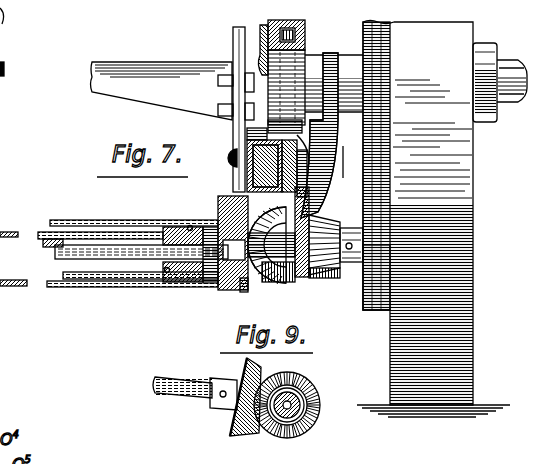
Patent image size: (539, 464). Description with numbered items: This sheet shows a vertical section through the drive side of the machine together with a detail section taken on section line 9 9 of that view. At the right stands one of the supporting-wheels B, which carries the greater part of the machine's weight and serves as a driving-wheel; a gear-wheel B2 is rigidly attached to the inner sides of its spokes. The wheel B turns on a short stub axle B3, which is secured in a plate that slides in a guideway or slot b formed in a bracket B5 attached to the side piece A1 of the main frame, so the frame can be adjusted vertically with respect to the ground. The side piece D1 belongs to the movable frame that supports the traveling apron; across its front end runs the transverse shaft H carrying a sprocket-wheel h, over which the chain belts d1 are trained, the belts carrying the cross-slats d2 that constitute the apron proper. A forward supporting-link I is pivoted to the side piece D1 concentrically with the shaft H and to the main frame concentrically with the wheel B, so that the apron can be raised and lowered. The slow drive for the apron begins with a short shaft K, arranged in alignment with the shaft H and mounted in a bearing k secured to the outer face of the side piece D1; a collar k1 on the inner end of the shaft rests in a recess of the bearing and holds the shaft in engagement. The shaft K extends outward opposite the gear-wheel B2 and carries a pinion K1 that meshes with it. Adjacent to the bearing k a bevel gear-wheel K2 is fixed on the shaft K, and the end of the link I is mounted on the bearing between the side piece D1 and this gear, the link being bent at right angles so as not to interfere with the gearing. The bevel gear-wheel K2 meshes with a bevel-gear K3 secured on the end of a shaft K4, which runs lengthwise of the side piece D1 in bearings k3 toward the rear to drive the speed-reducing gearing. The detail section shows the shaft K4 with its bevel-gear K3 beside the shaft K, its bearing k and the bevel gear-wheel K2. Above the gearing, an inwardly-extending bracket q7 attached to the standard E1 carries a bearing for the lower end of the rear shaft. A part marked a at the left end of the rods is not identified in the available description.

In FIG. 7, the supporting-wheel B is at (433, 219).
In FIG. 7, the gear-wheel B2 is at (377, 307).
In FIG. 7, the stub axle B3 is at (527, 104).
In FIG. 7, the bracket B5 is at (330, 38).
In FIG. 7, the guideway b is at (302, 50).
In FIG. 7, the bracket q7 is at (112, 78).
In FIG. 7, the standard E1 is at (233, 42).
In FIG. 7, the forward supporting-link I is at (315, 134).
In FIG. 7, the bearing k3 is at (297, 157).
In FIG. 7, the section line 9 is at (310, 290).
In FIG. 7, the side piece A1 is at (247, 150).
In FIG. 7, the shaft K4 is at (237, 186).
In FIG. 9, the shaft K4 is at (173, 366).
In FIG. 7, the side piece D1 is at (218, 200).
In FIG. 7, the short shaft K is at (288, 278).
In FIG. 9, the short shaft K is at (262, 437).
In FIG. 7, the bearing k is at (275, 283).
In FIG. 9, the bearing k is at (297, 428).
In FIG. 7, the collar k1 is at (247, 293).
In FIG. 7, the pinion K1 is at (390, 240).
In FIG. 7, the bevel gear-wheel K2 is at (340, 278).
In FIG. 9, the bevel gear-wheel K2 is at (325, 394).
In FIG. 7, the bevel-gear K3 is at (322, 213).
In FIG. 9, the bevel-gear K3 is at (230, 417).
In FIG. 7, the cross-slat d2 is at (113, 221).
In FIG. 7, the rod end a is at (43, 242).
In FIG. 7, the sprocket-wheel h is at (173, 227).
In FIG. 7, the front transverse shaft H is at (153, 277).
In FIG. 7, the chain belt d1 is at (200, 279).